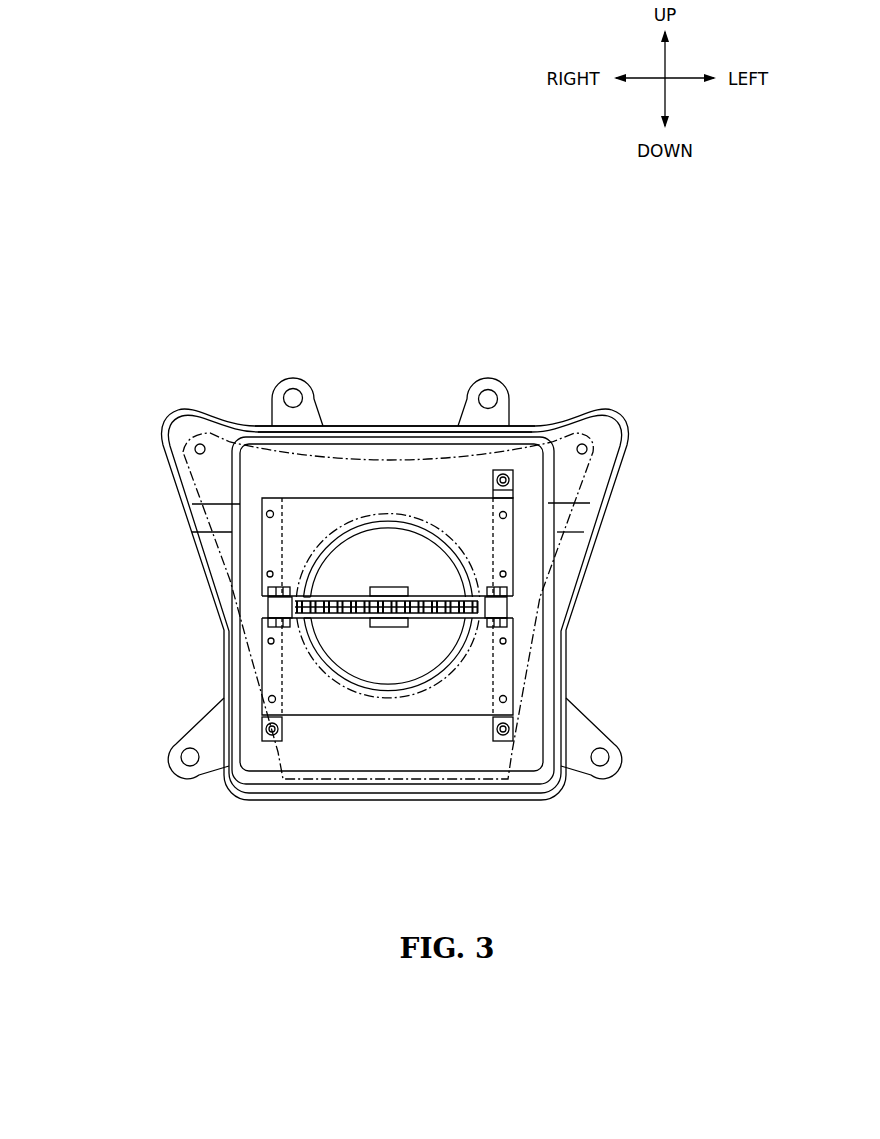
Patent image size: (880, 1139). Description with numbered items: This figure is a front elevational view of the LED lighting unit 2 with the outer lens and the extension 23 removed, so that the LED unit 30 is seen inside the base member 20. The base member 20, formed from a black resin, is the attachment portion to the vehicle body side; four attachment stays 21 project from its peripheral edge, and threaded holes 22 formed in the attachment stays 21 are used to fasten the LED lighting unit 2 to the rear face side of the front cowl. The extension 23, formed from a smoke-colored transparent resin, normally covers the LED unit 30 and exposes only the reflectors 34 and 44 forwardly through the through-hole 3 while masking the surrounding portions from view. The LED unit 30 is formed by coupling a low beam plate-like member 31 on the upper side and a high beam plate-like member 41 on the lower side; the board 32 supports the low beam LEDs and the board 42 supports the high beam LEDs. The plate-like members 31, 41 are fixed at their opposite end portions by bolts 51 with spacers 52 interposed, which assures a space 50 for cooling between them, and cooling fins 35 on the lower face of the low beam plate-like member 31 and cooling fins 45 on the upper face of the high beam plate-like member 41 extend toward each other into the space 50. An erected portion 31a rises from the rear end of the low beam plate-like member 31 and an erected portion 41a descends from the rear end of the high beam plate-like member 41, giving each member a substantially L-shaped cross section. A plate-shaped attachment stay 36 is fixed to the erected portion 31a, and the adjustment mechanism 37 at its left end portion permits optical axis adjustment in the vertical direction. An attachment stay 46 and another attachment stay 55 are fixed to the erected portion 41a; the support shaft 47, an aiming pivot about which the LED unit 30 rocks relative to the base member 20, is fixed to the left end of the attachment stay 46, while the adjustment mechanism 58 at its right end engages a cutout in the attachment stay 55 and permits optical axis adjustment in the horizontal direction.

The LED lighting unit 2 is at (288, 262).
The through-hole 3 is at (320, 543).
The base member 20 is at (567, 418).
The attachment stays 21 is at (310, 413).
The threaded holes 22 is at (291, 394).
The extension 23 is at (513, 442).
The LED unit 30 is at (388, 484).
The low beam plate-like member 31 is at (340, 594).
The erected portion 31a is at (282, 527).
The board 32 is at (387, 587).
The reflector 34 is at (450, 545).
The cooling fins 35 is at (415, 597).
The attachment stay 36 is at (492, 518).
The adjustment mechanism 37 is at (511, 480).
The high beam plate-like member 41 is at (340, 619).
The erected portion 41a is at (280, 660).
The board 42 is at (388, 627).
The reflector 44 is at (460, 675).
The cooling fins 45 is at (413, 620).
The attachment stay 46 is at (490, 697).
The support shaft 47 is at (503, 737).
The space 50 is at (366, 602).
The bolts 51 is at (280, 588).
The spacers 52 is at (270, 607).
The attachment stay 55 is at (283, 693).
The adjustment mechanism 58 is at (268, 743).